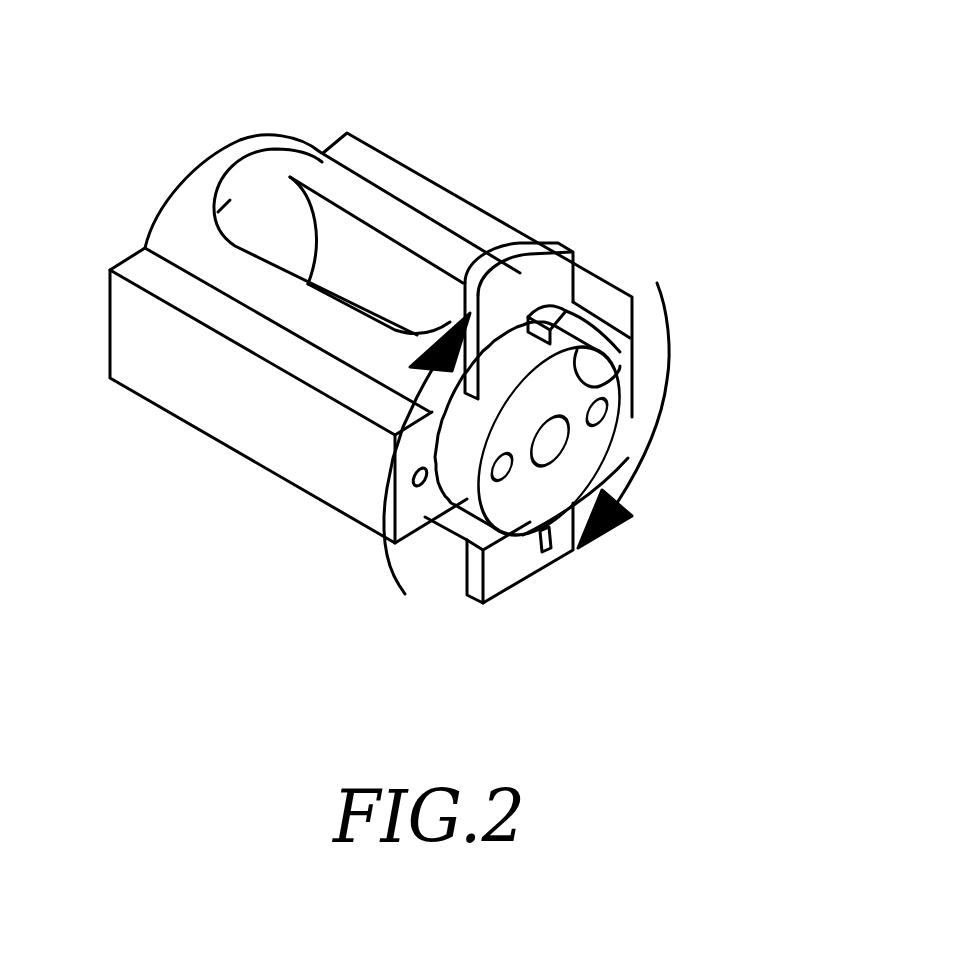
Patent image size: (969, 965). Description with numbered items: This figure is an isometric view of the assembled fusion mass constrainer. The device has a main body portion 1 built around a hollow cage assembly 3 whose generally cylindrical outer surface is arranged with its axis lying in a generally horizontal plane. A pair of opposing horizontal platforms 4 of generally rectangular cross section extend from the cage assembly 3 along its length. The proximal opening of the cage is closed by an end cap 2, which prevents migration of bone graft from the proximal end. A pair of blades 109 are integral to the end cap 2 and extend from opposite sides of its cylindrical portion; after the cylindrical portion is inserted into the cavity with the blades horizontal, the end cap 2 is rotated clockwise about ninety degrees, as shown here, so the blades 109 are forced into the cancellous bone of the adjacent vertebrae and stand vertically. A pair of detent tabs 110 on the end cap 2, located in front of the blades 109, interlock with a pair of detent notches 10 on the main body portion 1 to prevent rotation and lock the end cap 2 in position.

The main body portion 1 is at (212, 480).
The end cap 2 is at (457, 528).
The cage assembly 3 is at (187, 225).
The horizontal platforms 4 is at (375, 165).
The detent notches 10 is at (578, 310).
The blades 109 is at (553, 267).
The detent tabs 110 is at (608, 402).